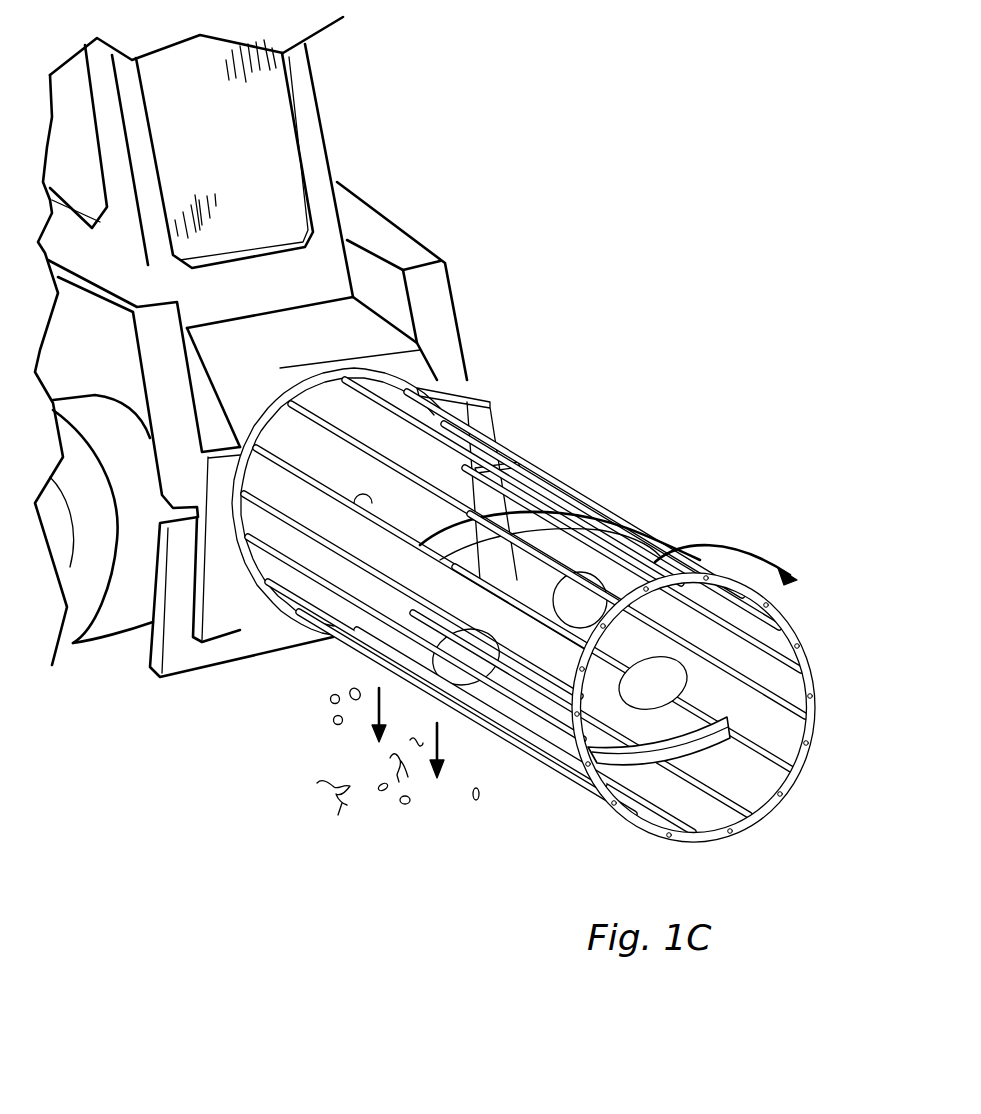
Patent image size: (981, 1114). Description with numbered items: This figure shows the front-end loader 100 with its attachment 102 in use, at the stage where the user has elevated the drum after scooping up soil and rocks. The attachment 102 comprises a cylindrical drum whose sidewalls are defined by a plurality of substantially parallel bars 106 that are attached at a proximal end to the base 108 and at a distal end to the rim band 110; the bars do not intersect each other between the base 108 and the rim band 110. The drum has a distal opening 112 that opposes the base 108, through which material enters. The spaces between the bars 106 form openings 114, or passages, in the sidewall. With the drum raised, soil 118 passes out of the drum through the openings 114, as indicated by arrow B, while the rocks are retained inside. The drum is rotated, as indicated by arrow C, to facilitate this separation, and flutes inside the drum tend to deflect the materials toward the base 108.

The front-end loader 100 is at (337, 183).
The attachment 102 is at (537, 611).
The bars 106 is at (773, 698).
The base 108 is at (417, 455).
The rim band 110 is at (802, 640).
The distal opening 112 is at (705, 615).
The openings 114 is at (764, 623).
The soil 118 is at (308, 688).